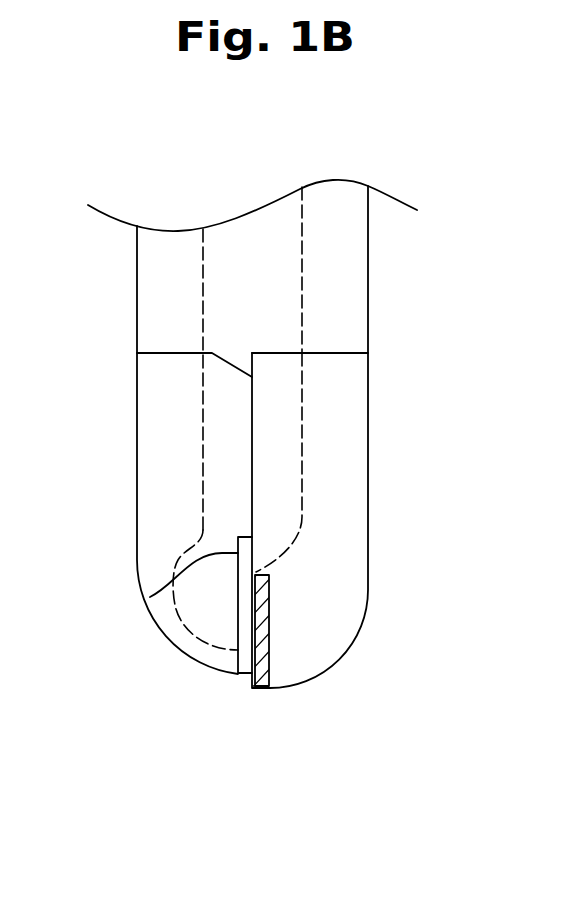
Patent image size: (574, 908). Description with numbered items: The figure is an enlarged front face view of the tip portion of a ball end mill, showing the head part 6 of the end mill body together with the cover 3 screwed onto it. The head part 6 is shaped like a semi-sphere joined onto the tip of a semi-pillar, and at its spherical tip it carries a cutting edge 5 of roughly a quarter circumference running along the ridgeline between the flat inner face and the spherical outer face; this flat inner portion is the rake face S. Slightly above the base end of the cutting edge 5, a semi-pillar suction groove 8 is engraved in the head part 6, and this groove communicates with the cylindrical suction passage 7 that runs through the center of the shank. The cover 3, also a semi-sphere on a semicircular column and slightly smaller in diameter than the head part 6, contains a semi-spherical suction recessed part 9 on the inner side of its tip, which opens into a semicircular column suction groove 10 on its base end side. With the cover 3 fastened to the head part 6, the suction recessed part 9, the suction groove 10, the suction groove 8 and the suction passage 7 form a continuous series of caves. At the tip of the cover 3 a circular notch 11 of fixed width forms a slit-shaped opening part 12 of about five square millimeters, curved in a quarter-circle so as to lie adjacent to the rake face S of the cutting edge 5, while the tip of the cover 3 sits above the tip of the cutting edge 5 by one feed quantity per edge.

The cover 3 is at (155, 513).
The cutting edge 5 is at (263, 635).
The head part 6 is at (352, 513).
The suction passage 7 is at (303, 261).
The suction groove 8 is at (302, 438).
The suction recessed part 9 is at (159, 637).
The suction groove 10 is at (203, 414).
The notch 11 is at (150, 597).
The opening part 12 is at (246, 634).
The rake face S is at (250, 686).